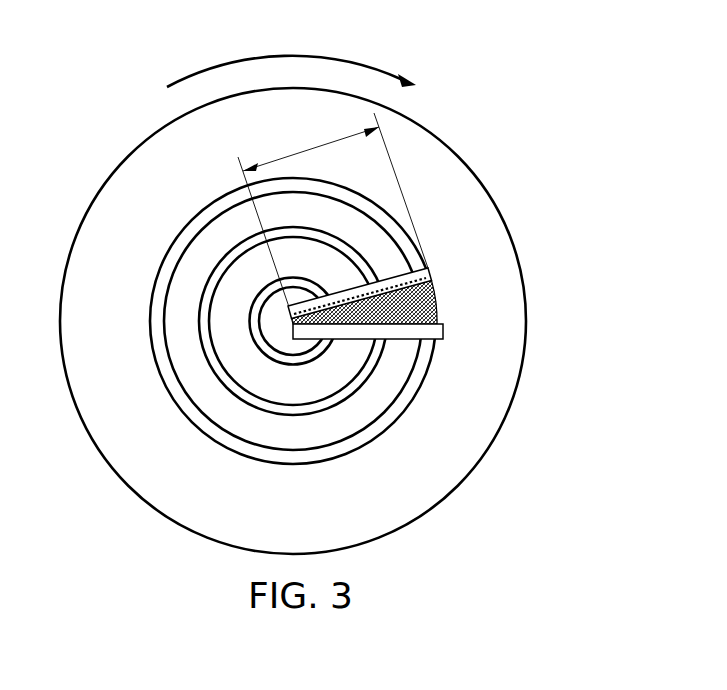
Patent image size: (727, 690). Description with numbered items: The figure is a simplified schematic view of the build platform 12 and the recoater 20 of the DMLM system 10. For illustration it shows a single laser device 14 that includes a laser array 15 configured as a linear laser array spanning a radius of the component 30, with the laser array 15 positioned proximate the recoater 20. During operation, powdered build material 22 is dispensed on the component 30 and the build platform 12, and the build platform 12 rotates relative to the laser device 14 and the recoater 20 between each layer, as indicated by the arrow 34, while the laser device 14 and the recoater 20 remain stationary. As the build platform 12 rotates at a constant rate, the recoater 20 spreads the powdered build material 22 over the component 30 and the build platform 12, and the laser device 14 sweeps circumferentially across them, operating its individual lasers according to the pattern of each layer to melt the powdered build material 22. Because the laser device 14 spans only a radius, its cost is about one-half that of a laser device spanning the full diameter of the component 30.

The DMLM system 10 is at (522, 46).
The build platform 12 is at (110, 177).
The laser device 14 is at (428, 272).
The laser array 15 is at (393, 273).
The recoater 20 is at (443, 327).
The powdered build material 22 is at (437, 300).
The component 30 is at (290, 463).
The arrow 34 is at (372, 62).